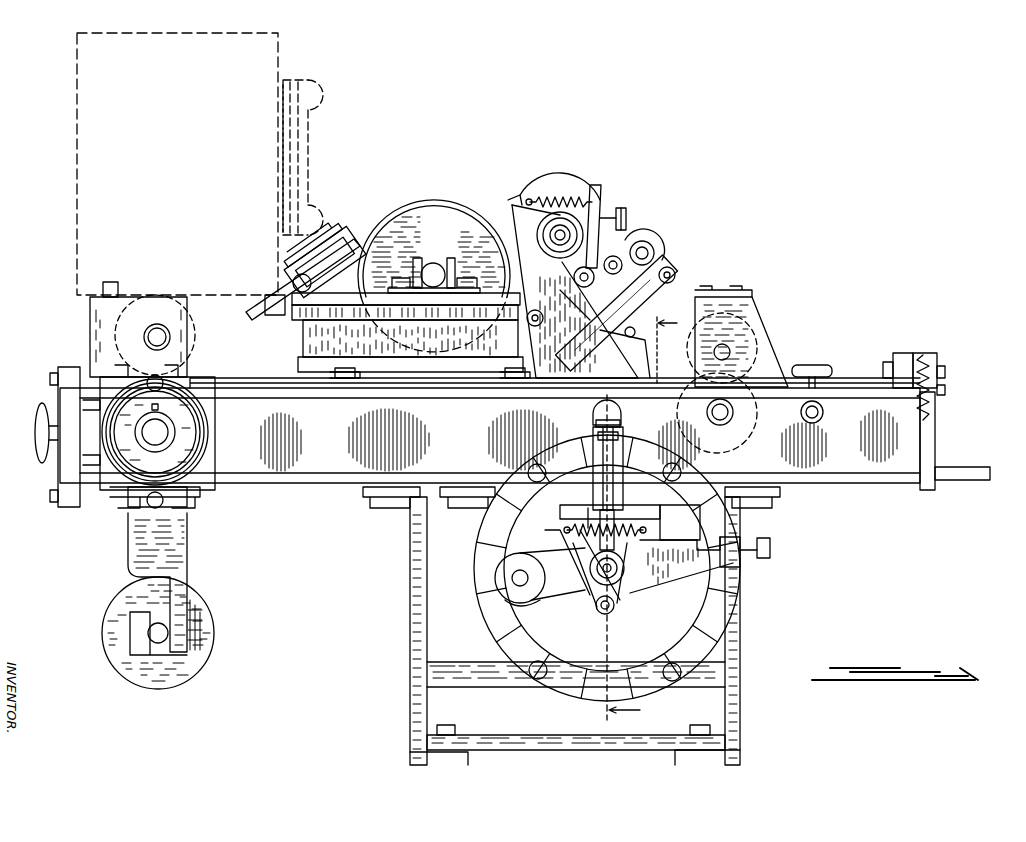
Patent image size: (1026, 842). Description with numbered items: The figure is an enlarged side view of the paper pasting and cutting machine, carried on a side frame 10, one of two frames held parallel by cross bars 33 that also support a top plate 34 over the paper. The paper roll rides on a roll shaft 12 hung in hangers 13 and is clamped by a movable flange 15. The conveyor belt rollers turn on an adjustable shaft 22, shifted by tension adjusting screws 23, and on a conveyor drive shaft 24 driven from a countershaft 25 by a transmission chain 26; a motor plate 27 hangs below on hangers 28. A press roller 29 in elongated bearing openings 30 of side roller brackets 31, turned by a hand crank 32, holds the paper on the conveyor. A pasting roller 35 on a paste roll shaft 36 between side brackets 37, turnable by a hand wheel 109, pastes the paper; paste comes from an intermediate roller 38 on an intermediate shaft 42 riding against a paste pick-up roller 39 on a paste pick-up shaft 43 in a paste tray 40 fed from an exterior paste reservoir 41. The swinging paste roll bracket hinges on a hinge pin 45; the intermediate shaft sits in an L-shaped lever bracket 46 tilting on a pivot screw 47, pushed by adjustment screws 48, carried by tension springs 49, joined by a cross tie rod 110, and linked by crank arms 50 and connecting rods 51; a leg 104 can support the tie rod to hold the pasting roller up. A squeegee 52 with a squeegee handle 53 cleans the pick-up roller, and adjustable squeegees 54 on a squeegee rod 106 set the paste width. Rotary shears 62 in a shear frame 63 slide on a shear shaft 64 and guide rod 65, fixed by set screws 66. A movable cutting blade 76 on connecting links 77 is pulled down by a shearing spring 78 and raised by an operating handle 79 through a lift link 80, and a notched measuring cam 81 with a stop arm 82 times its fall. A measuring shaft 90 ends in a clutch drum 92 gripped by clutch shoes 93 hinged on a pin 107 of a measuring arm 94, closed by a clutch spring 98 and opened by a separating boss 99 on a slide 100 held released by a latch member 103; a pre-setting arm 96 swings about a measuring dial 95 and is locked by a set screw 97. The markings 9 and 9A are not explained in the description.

The section line 9 is at (643, 518).
The bracket 9A is at (586, 512).
The side frame 10 is at (362, 470).
The roll shaft 12 is at (148, 635).
The hangers 13 is at (185, 555).
The movable flange 15 is at (626, 499).
The adjustable shaft 22 is at (168, 432).
The tension adjusting screws 23 is at (38, 440).
The conveyor drive shaft 24 is at (618, 410).
The countershaft 25 is at (495, 585).
The transmission chain 26 is at (500, 620).
The motor plate 27 is at (525, 738).
The hangers 28 is at (410, 710).
The press roller 29 is at (192, 340).
The bearing openings 30 is at (158, 324).
The side roller brackets 31 is at (100, 340).
The hand crank 32 is at (200, 448).
The cross bars 33 is at (345, 380).
The top plate 34 is at (280, 378).
The pasting roller 35 is at (640, 346).
The paste roll shaft 36 is at (582, 305).
The side brackets 37 is at (637, 370).
The intermediate roller 38 is at (516, 222).
The paste pick-up roller 39 is at (394, 226).
The paste tray 40 is at (305, 346).
The exterior paste reservoir 41 is at (77, 268).
The intermediate shaft 42 is at (520, 200).
The paste pick-up shaft 43 is at (438, 266).
The hinge pin 45 is at (582, 288).
The L-shaped lever bracket 46 is at (540, 198).
The pivot screw 47 is at (618, 256).
The adjustment screws 48 is at (628, 220).
The tension springs 49 is at (594, 186).
The crank arms 50 is at (656, 252).
The connecting rods 51 is at (660, 306).
The squeegee 52 is at (332, 244).
The squeegee handle 53 is at (250, 310).
The adjustable squeegees 54 is at (552, 244).
The rotary shears 62 is at (755, 345).
The shear frame 63 is at (748, 318).
The shear shaft 64 is at (728, 420).
The guide rod 65 is at (824, 414).
The set screws 66 is at (818, 368).
The movable cutting blade 76 is at (896, 352).
The connecting links 77 is at (920, 352).
The shearing spring 78 is at (932, 398).
The operating handle 79 is at (962, 468).
The lift link 80 is at (936, 444).
The notched measuring cam 81 is at (594, 608).
The stop arm 82 is at (655, 530).
The measuring shaft 90 is at (575, 572).
The clutch drum 92 is at (626, 606).
The clutch shoes 93 is at (592, 597).
The measuring arm 94 is at (595, 420).
The measuring dial 95 is at (738, 596).
The pre-setting arm 96 is at (742, 558).
The set screw 97 is at (768, 542).
The clutch spring 98 is at (558, 546).
The separating boss 99 is at (655, 514).
The slide 100 is at (626, 442).
The latch member 103 is at (597, 434).
The leg 104 is at (676, 278).
The squeegee rod 106 is at (525, 318).
The pin 107 is at (612, 612).
The hand wheel 109 is at (612, 212).
The cross tie rod 110 is at (672, 285).